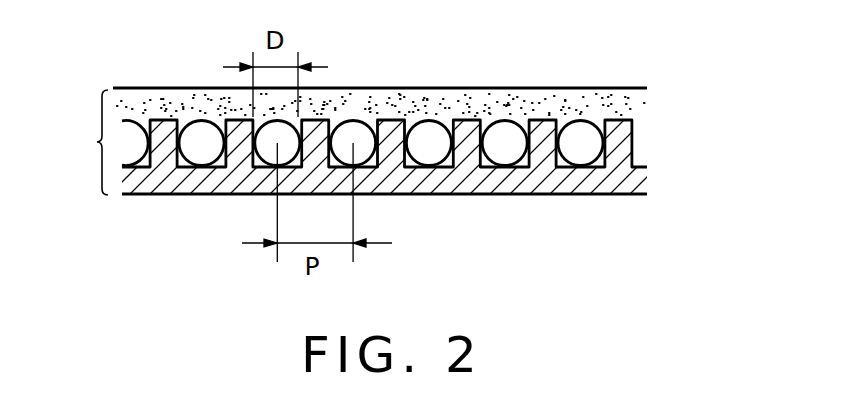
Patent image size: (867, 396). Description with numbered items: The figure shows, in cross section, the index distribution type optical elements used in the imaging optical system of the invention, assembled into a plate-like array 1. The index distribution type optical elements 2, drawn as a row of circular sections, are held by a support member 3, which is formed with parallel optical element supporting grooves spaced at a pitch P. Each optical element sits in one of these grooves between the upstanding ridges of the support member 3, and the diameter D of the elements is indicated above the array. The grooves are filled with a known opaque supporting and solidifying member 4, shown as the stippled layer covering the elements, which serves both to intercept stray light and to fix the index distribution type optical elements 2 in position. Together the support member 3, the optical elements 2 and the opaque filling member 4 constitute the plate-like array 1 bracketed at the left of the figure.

The plate-like array 1 is at (83, 149).
The index distribution type optical elements 2 is at (588, 138).
The support member 3 is at (615, 177).
The opaque supporting and solidifying member 4 is at (543, 98).